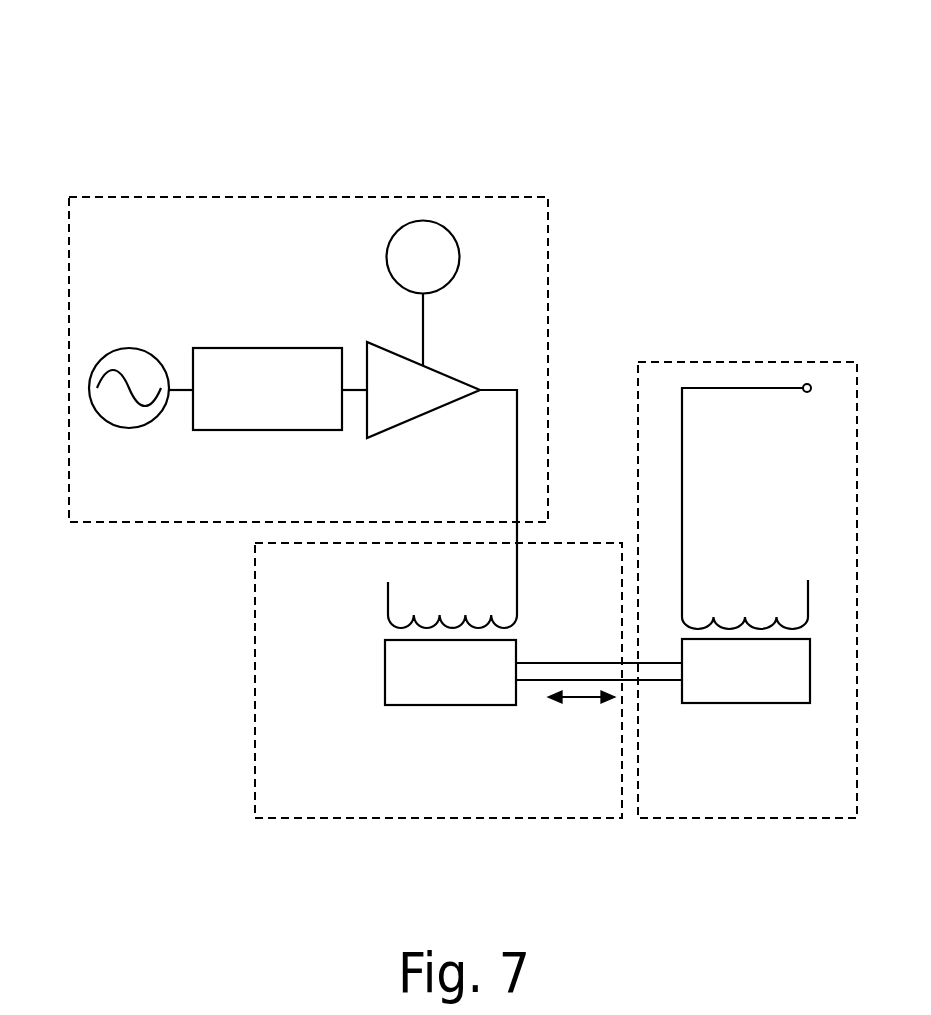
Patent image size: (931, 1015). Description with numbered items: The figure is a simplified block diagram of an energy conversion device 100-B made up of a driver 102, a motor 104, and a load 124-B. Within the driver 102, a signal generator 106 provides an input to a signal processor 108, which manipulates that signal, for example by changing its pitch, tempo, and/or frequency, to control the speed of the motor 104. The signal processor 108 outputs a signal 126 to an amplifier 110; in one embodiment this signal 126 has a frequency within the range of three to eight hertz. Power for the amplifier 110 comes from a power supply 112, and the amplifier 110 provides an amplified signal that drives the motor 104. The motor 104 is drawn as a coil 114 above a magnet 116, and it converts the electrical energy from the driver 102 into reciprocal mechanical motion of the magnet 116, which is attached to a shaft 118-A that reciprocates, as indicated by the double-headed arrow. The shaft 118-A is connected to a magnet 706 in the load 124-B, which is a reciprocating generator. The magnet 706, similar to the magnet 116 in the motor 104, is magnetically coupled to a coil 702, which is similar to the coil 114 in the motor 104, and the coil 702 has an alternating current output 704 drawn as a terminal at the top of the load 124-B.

The energy conversion device 100-B is at (720, 68).
The driver 102 is at (143, 195).
The motor 104 is at (397, 822).
The signal generator 106 is at (128, 429).
The signal processor 108 is at (279, 431).
The amplifier 110 is at (401, 426).
The power supply 112 is at (387, 253).
The coil 114 is at (388, 598).
The magnet 116 is at (443, 706).
The shaft 118-A is at (532, 682).
The load 124-B is at (750, 822).
The signal 126 is at (360, 388).
The coil 702 is at (784, 617).
The alternating current output 704 is at (807, 393).
The magnet 706 is at (735, 704).